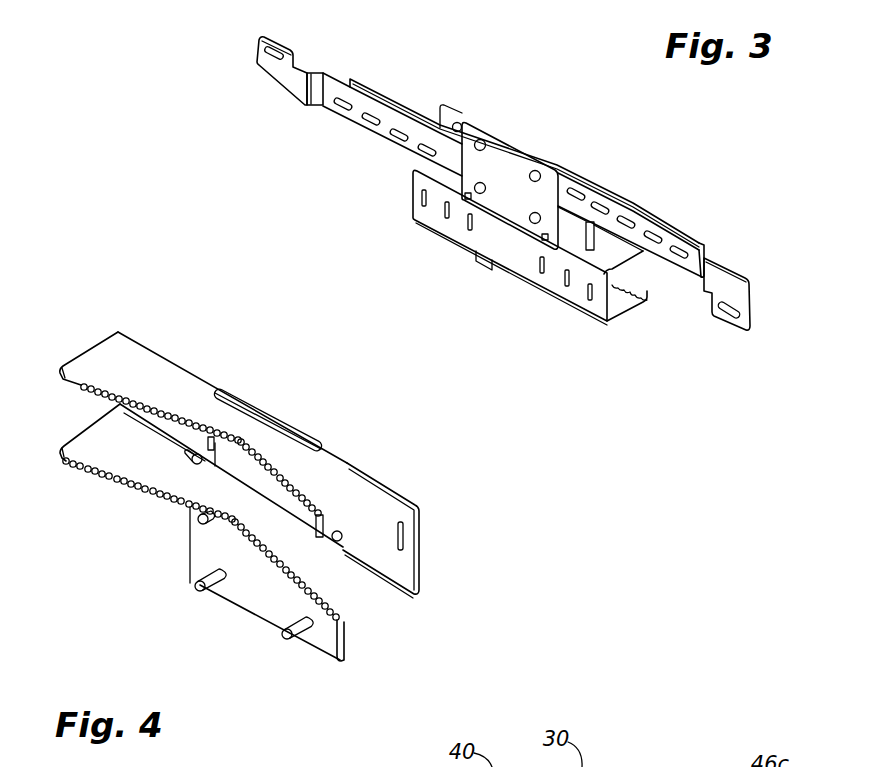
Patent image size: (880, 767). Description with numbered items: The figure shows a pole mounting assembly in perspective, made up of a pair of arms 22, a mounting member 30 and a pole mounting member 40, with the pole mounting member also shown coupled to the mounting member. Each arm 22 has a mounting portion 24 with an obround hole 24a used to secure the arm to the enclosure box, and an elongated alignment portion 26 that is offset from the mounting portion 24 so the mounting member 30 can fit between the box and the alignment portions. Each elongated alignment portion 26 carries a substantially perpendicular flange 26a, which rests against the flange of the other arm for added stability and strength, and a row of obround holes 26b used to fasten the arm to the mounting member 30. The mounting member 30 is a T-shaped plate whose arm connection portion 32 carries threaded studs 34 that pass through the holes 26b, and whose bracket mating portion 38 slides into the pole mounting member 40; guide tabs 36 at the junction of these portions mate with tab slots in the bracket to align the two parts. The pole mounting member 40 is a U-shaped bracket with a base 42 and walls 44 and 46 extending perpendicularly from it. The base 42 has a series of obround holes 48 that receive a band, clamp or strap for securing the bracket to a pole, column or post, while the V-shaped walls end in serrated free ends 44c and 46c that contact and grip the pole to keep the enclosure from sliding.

In FIG. 3, the arm 22 is at (370, 66).
In FIG. 3, the mounting portion 24 is at (276, 74).
In FIG. 3, the hole 24a is at (268, 56).
In FIG. 3, the elongated alignment portion 26 is at (325, 112).
In FIG. 3, the flange 26a is at (385, 100).
In FIG. 3, the holes 26b is at (367, 120).
In FIG. 3, the mounting member 30 is at (507, 289).
In FIG. 4, the mounting member 30 is at (301, 647).
In FIG. 3, the arm connection portion 32 is at (503, 156).
In FIG. 4, the arm connection portion 32 is at (253, 596).
In FIG. 3, the studs 34 is at (482, 128).
In FIG. 4, the studs 34 is at (199, 519).
In FIG. 4, the guide tabs 36 is at (192, 459).
In FIG. 3, the bracket mating portion 38 is at (490, 262).
In FIG. 4, the bracket mating portion 38 is at (270, 408).
In FIG. 3, the pole mounting member 40 is at (419, 229).
In FIG. 4, the pole mounting member 40 is at (175, 348).
In FIG. 3, the base 42 is at (412, 193).
In FIG. 4, the base 42 is at (425, 563).
In FIG. 3, the wall 44 is at (627, 256).
In FIG. 4, the wall 44 is at (371, 605).
In FIG. 4, the free end 44c is at (85, 478).
In FIG. 3, the wall 46 is at (614, 305).
In FIG. 4, the wall 46 is at (92, 355).
In FIG. 4, the free end 46c is at (83, 392).
In FIG. 3, the holes 48 is at (468, 224).
In FIG. 4, the holes 48 is at (391, 530).